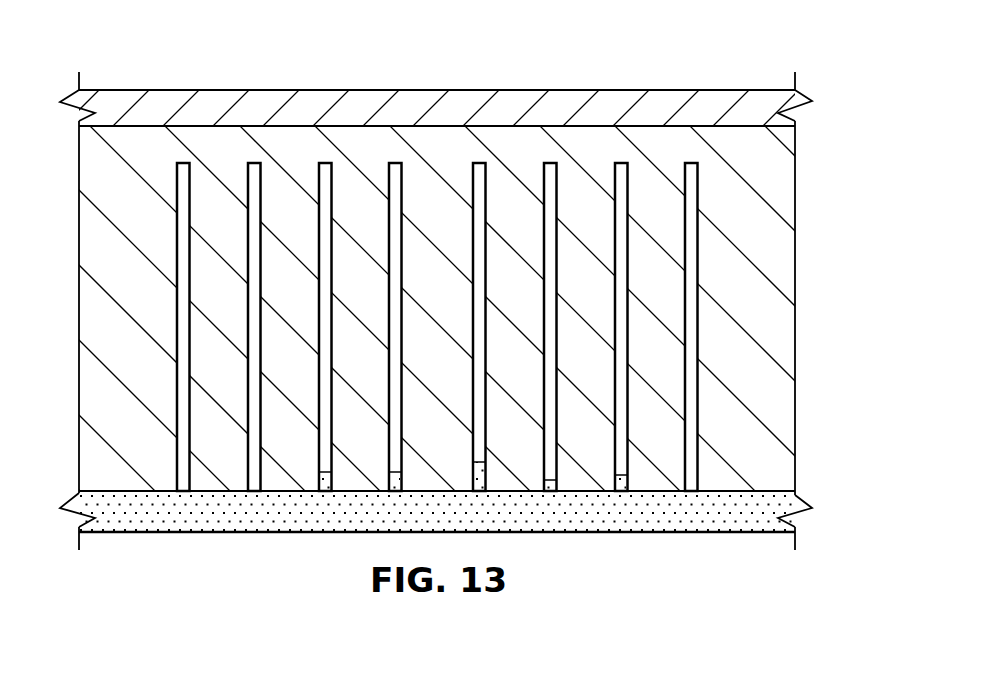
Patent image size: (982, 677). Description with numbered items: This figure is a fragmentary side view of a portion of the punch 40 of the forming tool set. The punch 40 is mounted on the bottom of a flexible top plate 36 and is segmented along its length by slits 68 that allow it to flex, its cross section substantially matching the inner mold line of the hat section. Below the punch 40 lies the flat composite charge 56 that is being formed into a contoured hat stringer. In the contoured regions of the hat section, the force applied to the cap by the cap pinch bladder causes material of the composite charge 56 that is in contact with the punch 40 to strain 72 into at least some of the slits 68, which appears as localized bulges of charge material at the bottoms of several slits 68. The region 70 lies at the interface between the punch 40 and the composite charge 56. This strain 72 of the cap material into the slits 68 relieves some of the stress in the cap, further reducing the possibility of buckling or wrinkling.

The top plate 36 is at (318, 101).
The punch 40 is at (88, 238).
The composite charge 56 is at (198, 535).
The slits 68 is at (184, 173).
The interface surface 70 is at (779, 484).
The strain 72 is at (409, 470).